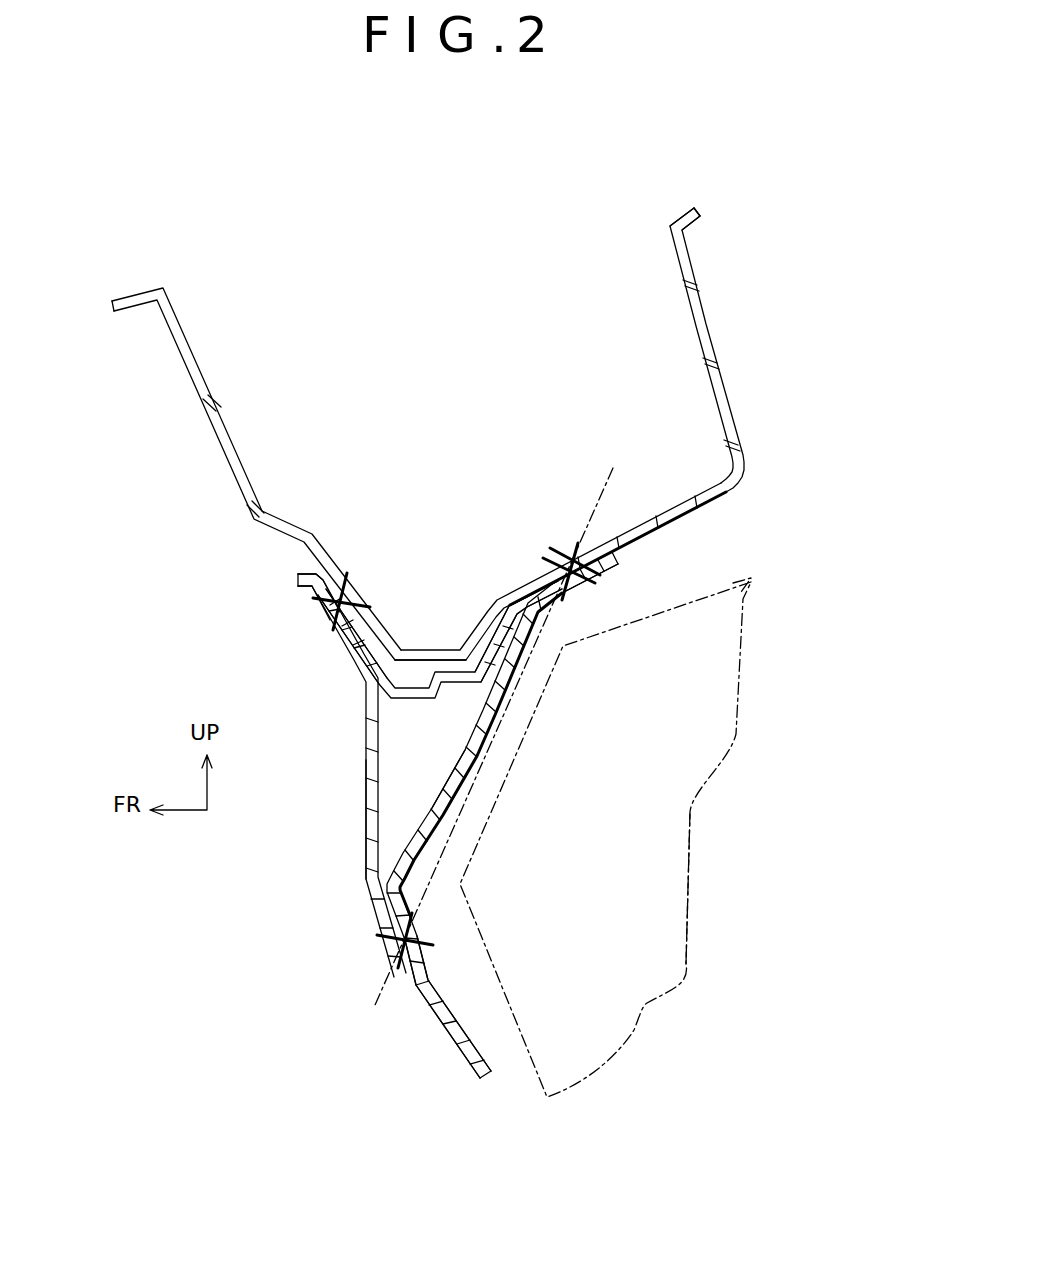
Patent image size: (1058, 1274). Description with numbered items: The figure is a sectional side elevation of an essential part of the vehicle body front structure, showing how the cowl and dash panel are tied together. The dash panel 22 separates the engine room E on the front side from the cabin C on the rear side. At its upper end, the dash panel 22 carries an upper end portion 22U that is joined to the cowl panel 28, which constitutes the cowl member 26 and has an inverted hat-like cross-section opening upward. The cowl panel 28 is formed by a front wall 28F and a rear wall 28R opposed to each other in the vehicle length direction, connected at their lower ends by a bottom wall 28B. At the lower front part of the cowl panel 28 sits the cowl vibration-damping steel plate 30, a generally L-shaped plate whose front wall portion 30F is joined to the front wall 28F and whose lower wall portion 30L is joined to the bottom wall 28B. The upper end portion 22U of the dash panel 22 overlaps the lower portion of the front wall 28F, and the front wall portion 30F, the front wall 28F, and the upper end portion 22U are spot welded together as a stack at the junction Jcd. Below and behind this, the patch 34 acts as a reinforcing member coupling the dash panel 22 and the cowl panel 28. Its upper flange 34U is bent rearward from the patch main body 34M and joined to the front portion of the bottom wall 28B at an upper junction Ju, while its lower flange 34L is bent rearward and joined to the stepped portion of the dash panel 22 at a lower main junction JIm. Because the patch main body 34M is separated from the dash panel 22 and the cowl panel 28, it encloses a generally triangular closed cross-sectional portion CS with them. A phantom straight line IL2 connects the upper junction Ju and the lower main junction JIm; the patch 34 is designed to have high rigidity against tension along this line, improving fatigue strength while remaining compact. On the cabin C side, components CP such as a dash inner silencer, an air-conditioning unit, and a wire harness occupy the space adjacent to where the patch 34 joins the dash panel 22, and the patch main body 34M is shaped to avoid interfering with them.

The cowl panel 28 is at (431, 382).
The cowl member 26 is at (676, 186).
The front wall 28F is at (252, 455).
The bottom wall 28B is at (548, 572).
The rear wall 28R is at (698, 326).
The dash panel 22 is at (302, 775).
The upper end portion 22U is at (300, 581).
The cowl vibration-damping steel plate 30 is at (440, 674).
The front wall portion 30F is at (350, 661).
The lower wall portion 30L is at (565, 600).
The patch 34 is at (559, 807).
The upper flange 34U is at (600, 574).
The patch main body 34M is at (452, 813).
The lower flange 34L is at (432, 968).
The junction Jcd is at (445, 520).
The upper junction Ju is at (609, 600).
The lower main junction JIm is at (436, 935).
The phantom straight line IL2 is at (613, 478).
The components CP is at (752, 580).
The cabin C is at (739, 888).
The engine room E is at (310, 831).
The closed cross-sectional portion CS is at (430, 700).